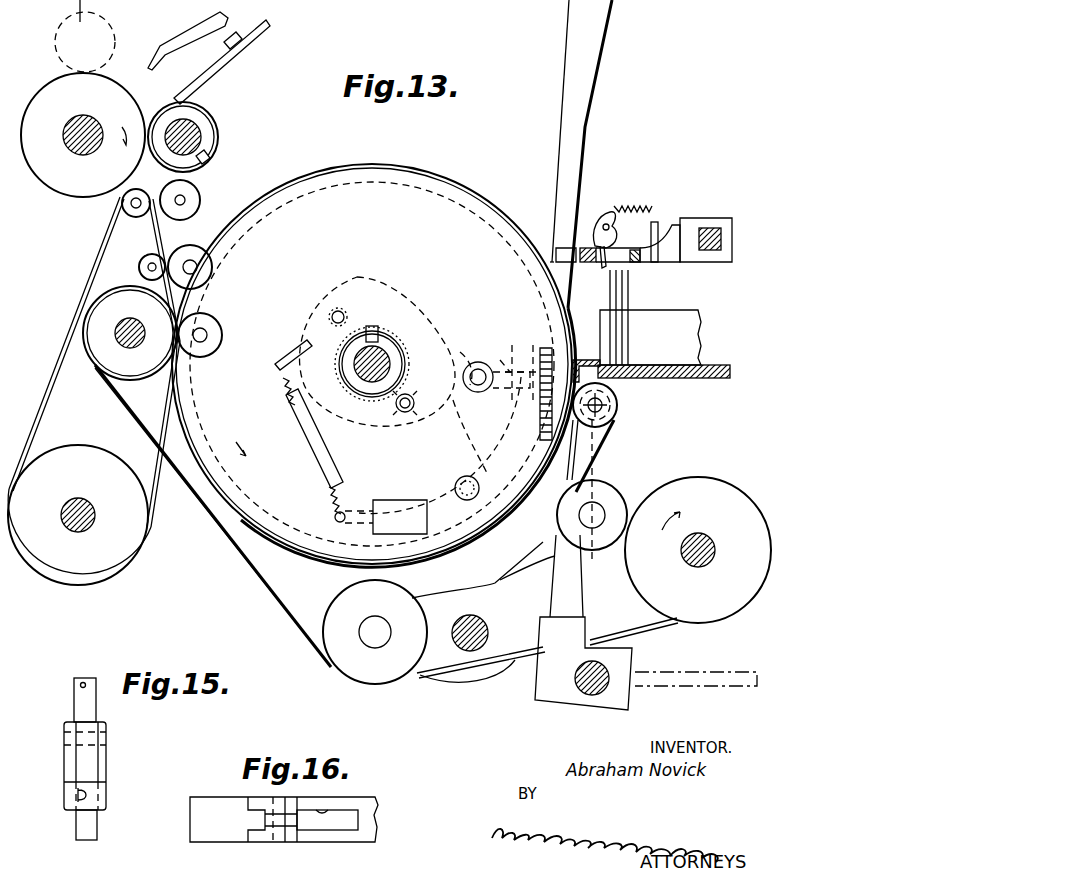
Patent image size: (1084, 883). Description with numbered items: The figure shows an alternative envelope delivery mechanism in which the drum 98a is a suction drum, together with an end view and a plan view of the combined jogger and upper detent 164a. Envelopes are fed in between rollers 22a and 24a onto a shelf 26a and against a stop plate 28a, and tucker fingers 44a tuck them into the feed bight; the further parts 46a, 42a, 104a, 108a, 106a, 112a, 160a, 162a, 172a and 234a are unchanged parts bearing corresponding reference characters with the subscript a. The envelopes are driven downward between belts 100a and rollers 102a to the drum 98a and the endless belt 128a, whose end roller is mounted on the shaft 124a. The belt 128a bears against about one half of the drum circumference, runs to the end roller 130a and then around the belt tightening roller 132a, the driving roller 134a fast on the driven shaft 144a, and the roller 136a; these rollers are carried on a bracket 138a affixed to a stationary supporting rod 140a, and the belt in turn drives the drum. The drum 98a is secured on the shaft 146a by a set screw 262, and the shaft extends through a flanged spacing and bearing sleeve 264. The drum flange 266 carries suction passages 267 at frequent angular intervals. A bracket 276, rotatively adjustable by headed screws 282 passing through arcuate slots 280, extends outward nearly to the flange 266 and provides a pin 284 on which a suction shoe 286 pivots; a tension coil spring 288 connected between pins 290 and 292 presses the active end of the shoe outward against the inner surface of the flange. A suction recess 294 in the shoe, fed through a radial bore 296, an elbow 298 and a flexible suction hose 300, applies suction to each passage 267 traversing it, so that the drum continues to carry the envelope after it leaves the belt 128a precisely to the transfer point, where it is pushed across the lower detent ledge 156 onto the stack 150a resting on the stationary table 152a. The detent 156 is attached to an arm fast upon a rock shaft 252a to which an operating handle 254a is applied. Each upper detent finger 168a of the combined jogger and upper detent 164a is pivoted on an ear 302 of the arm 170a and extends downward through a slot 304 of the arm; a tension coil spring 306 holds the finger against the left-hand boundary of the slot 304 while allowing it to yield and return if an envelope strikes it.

In FIG. 13, the roller 22a is at (57, 183).
In FIG. 13, the roller shaft 46a is at (84, 116).
In FIG. 13, the roller 24a is at (214, 120).
In FIG. 13, the clip 42a is at (206, 160).
In FIG. 13, the tucker fingers 44a is at (178, 40).
In FIG. 13, the shelf 26a is at (206, 80).
In FIG. 13, the stop plate 28a is at (236, 38).
In FIG. 13, the idler roller 104a is at (135, 217).
In FIG. 13, the rollers 102a is at (194, 250).
In FIG. 13, the idler roller 108a is at (139, 267).
In FIG. 13, the shaft 124a is at (133, 347).
In FIG. 13, the take-up roller 106a is at (80, 447).
In FIG. 13, the roller shaft 112a is at (78, 532).
In FIG. 13, the suction drum 98a is at (330, 168).
In FIG. 13, the belts 100a is at (175, 410).
In FIG. 13, the flange 266 is at (405, 180).
In FIG. 13, the belt 128a is at (258, 538).
In FIG. 13, the shaft 146a is at (378, 360).
In FIG. 13, the set screw 262 is at (372, 326).
In FIG. 13, the flanged spacing and bearing sleeve 264 is at (312, 350).
In FIG. 13, the arcuate slots 280 is at (341, 305).
In FIG. 13, the headed screws 282 is at (330, 313).
In FIG. 13, the pin 290 is at (283, 362).
In FIG. 13, the tension coil spring 288 is at (282, 386).
In FIG. 13, the bracket 276 is at (356, 416).
In FIG. 13, the pin 292 is at (360, 508).
In FIG. 13, the pin 284 is at (452, 488).
In FIG. 13, the suction shoe 286 is at (486, 438).
In FIG. 13, the flexible suction hose 300 is at (459, 356).
In FIG. 13, the elbow 298 is at (480, 362).
In FIG. 13, the radial bore 296 is at (507, 356).
In FIG. 13, the suction recess 294 is at (530, 344).
In FIG. 13, the suction passages 267 is at (538, 405).
In FIG. 13, the guide rods 160a is at (554, 56).
In FIG. 13, the bracket 162a is at (560, 252).
In FIG. 13, the upper detent finger 168a is at (590, 264).
In FIG. 15, the upper detent finger 168a is at (78, 832).
In FIG. 16, the upper detent finger 168a is at (268, 816).
In FIG. 13, the slot 304 is at (626, 248).
In FIG. 15, the slot 304 is at (76, 800).
In FIG. 16, the slot 304 is at (324, 808).
In FIG. 13, the ear 302 is at (600, 215).
In FIG. 15, the ear 302 is at (100, 765).
In FIG. 16, the ear 302 is at (260, 800).
In FIG. 13, the tension coil spring 306 is at (635, 208).
In FIG. 13, the combined jogger and upper detent 164a is at (660, 232).
In FIG. 13, the arm 170a is at (690, 262).
In FIG. 15, the arm 170a is at (107, 796).
In FIG. 16, the arm 170a is at (378, 818).
In FIG. 13, the block 234a is at (732, 236).
In FIG. 13, the stack 150a is at (635, 288).
In FIG. 13, the block 172a is at (700, 338).
In FIG. 13, the stationary table 152a is at (672, 378).
In FIG. 13, the lower detent ledge 156 is at (585, 358).
In FIG. 13, the end roller 130a is at (618, 408).
In FIG. 13, the belt tightening roller 132a is at (556, 510).
In FIG. 13, the roller 134a is at (700, 478).
In FIG. 13, the shaft 144a is at (700, 566).
In FIG. 13, the rock shaft 252a is at (585, 668).
In FIG. 13, the operating handle 254a is at (724, 684).
In FIG. 13, the roller 136a is at (345, 658).
In FIG. 13, the stationary supporting rod 140a is at (465, 616).
In FIG. 13, the bracket 138a is at (505, 645).